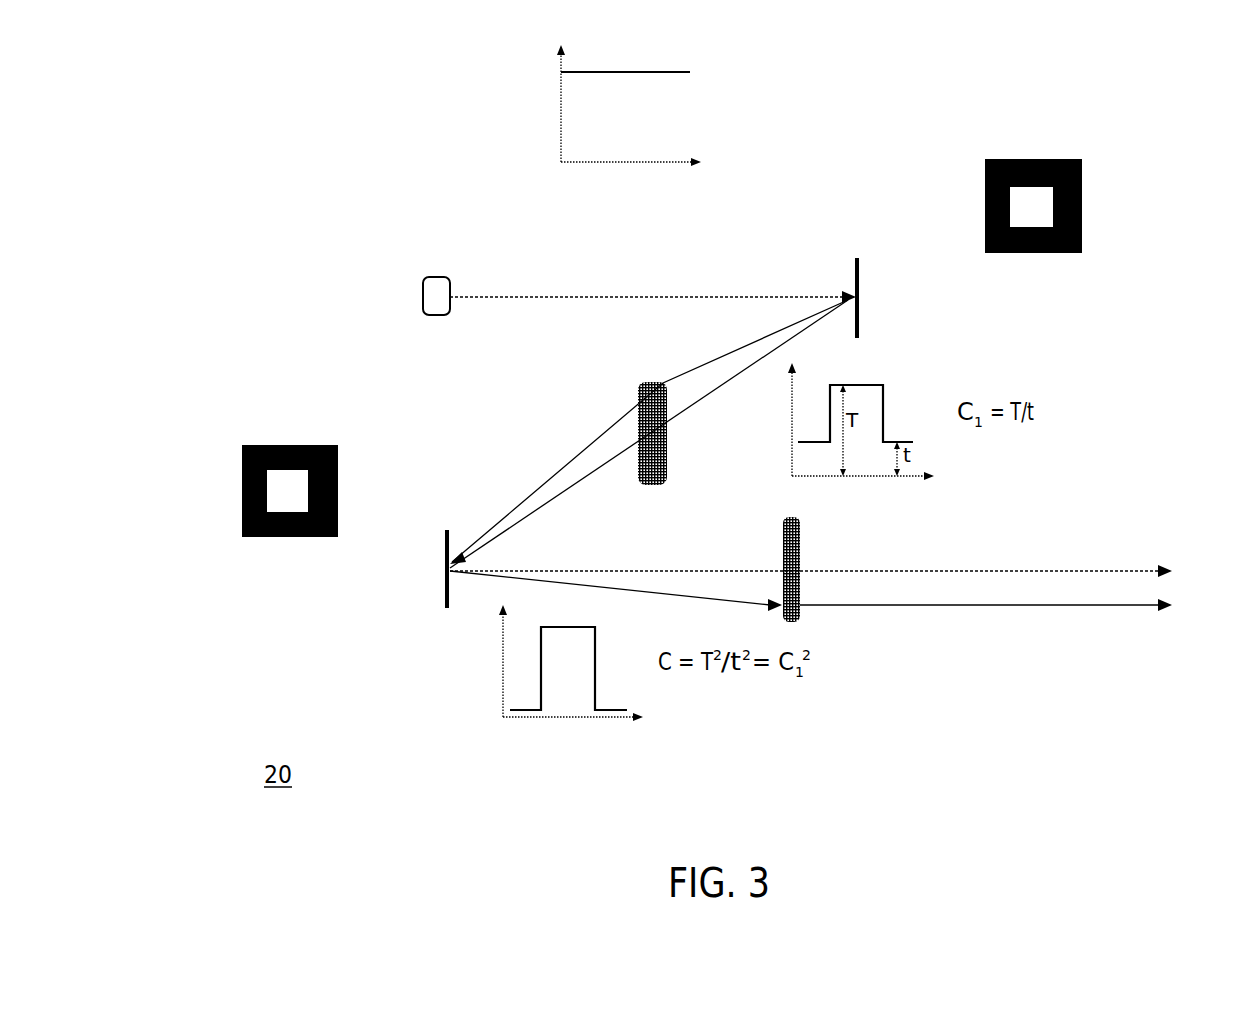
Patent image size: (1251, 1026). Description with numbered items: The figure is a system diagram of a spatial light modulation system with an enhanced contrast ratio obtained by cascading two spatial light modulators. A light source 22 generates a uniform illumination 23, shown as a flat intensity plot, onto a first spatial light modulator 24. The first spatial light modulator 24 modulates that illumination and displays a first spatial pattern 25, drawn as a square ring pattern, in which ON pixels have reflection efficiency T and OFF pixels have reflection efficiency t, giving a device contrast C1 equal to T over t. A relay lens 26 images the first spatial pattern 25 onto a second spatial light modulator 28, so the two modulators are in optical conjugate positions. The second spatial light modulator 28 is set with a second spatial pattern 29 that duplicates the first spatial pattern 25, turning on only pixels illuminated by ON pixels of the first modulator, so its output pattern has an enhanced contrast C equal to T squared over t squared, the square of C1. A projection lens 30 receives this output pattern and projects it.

The light source 22 is at (423, 297).
The uniform illumination 23 is at (546, 99).
The first spatial light modulator 24 is at (860, 326).
The first spatial pattern 25 is at (1073, 174).
The relay lens 26 is at (636, 392).
The second spatial light modulator 28 is at (443, 556).
The second spatial pattern 29 is at (285, 458).
The projection lens 30 is at (803, 553).